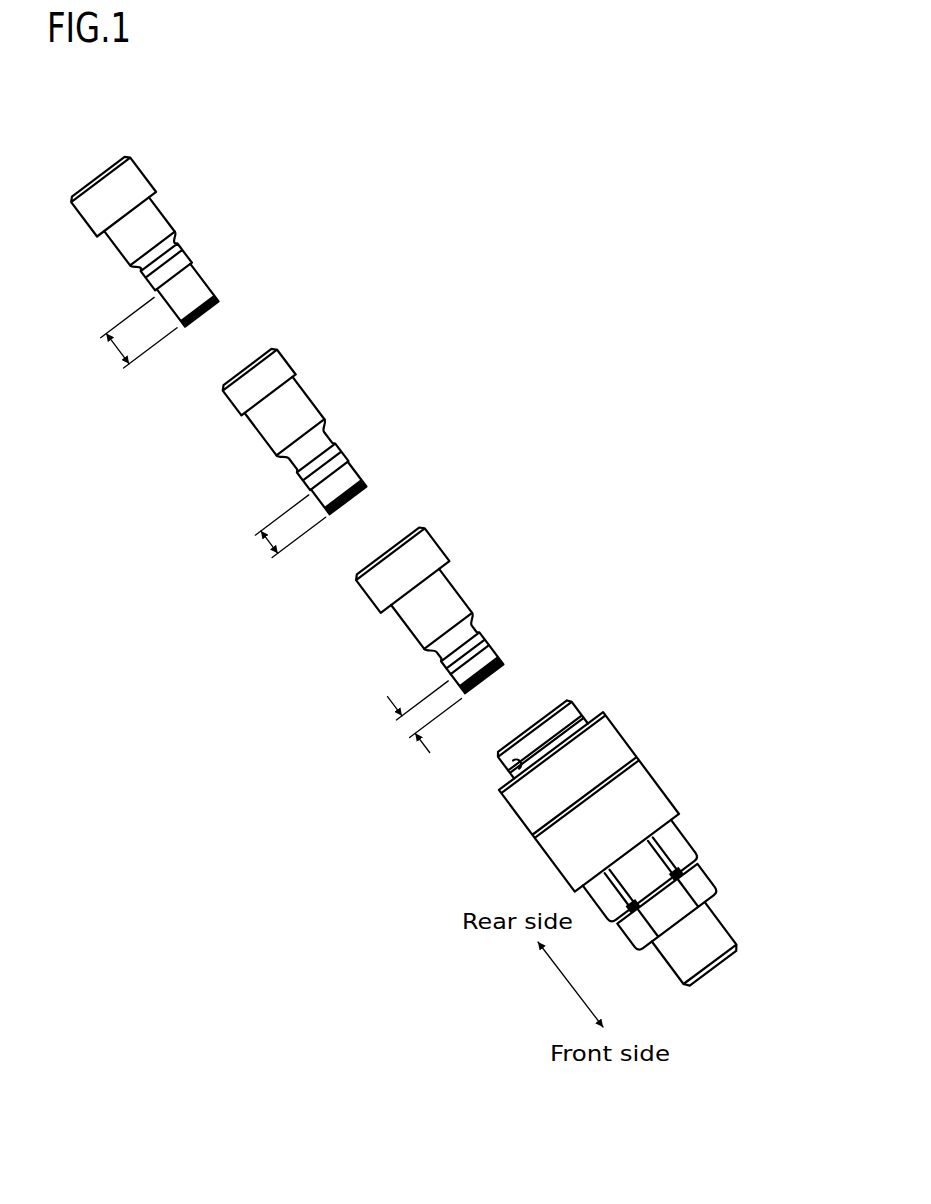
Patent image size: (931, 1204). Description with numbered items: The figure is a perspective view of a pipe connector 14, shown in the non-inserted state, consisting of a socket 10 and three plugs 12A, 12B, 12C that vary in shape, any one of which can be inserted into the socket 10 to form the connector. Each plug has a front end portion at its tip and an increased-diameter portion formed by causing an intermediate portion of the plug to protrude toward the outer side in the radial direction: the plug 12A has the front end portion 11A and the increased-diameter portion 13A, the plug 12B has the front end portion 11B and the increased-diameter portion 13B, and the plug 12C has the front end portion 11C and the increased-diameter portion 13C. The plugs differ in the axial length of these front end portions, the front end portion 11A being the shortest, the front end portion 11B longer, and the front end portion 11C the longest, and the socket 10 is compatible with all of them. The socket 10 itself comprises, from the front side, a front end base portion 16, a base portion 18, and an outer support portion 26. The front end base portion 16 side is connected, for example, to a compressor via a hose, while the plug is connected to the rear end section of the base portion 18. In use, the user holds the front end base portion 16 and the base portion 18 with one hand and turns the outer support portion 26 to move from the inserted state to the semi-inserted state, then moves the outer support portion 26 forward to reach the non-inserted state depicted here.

The socket 10 is at (652, 666).
The pipe connector 14 is at (507, 324).
The plug 12A is at (448, 550).
The increased-diameter portion 13A is at (500, 623).
The front end portion 11A is at (507, 663).
The plug 12B is at (288, 358).
The increased-diameter portion 13B is at (343, 447).
The front end portion 11B is at (358, 472).
The plug 12C is at (147, 172).
The increased-diameter portion 13C is at (192, 248).
The front end portion 11C is at (208, 280).
The outer support portion 26 is at (657, 777).
The base portion 18 is at (692, 830).
The front end base portion 16 is at (727, 920).